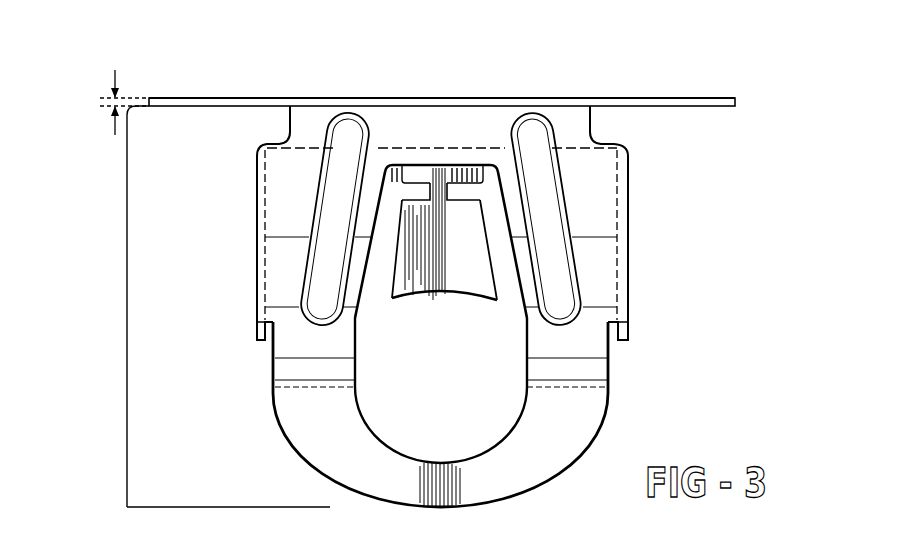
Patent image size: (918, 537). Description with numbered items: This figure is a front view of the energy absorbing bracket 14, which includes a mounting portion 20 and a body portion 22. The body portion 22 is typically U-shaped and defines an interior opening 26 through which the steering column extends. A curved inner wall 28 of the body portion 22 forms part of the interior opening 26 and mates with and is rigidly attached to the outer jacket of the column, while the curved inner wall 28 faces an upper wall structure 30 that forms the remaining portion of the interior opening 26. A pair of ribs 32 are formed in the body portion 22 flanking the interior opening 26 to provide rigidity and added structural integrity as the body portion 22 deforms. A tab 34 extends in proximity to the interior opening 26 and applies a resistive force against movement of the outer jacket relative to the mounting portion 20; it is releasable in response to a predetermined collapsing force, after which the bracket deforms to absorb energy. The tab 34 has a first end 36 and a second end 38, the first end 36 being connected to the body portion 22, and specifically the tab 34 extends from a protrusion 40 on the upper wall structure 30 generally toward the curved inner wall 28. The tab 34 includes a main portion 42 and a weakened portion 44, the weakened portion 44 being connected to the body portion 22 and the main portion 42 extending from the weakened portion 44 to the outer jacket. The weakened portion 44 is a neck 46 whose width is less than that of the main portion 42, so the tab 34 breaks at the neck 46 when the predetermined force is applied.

The energy absorbing bracket 14 is at (748, 98).
The mounting portion 20 is at (114, 72).
The body portion 22 is at (127, 283).
The interior opening 26 is at (495, 367).
The curved inner wall 28 is at (443, 465).
The upper wall structure 30 is at (437, 160).
The rib 32 is at (330, 214).
The tab 34 is at (423, 288).
The first end 36 is at (440, 187).
The second end 38 is at (452, 292).
The protrusion 40 is at (410, 178).
The main portion 42 is at (480, 292).
The weakened portion 44 is at (436, 191).
The neck 46 is at (436, 191).